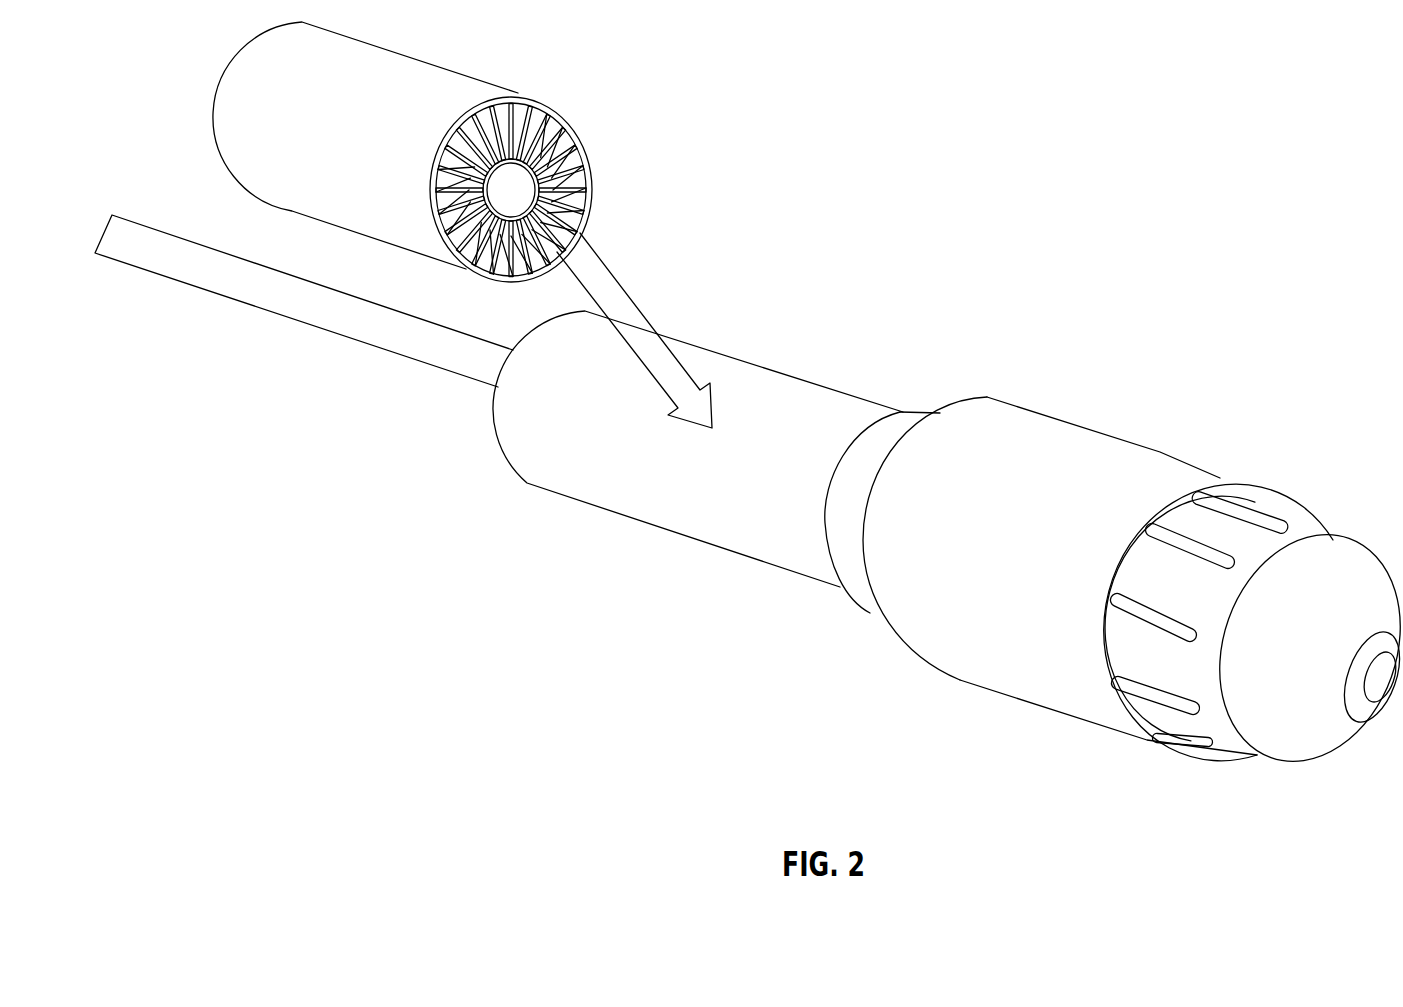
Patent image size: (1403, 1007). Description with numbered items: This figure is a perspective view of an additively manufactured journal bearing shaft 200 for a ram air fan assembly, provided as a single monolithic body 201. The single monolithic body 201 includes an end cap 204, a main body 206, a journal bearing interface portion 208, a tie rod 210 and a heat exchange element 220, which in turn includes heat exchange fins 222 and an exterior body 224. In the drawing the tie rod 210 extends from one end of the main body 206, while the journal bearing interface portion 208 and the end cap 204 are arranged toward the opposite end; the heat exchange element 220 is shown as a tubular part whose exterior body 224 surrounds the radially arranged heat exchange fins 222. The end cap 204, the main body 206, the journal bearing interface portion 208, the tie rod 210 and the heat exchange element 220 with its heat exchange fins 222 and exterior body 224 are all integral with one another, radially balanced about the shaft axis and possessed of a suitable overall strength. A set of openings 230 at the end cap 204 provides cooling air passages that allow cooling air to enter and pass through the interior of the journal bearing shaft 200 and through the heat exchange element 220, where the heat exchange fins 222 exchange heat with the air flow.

The journal bearing shaft 200 is at (948, 538).
The single monolithic body 201 is at (797, 462).
The end cap 204 is at (1313, 640).
The main body 206 is at (725, 372).
The journal bearing interface portion 208 is at (1172, 465).
The tie rod 210 is at (142, 235).
The heat exchange element 220 is at (480, 93).
The heat exchange fins 222 is at (590, 157).
The exterior body 224 is at (570, 117).
The set of openings 230 is at (1227, 512).